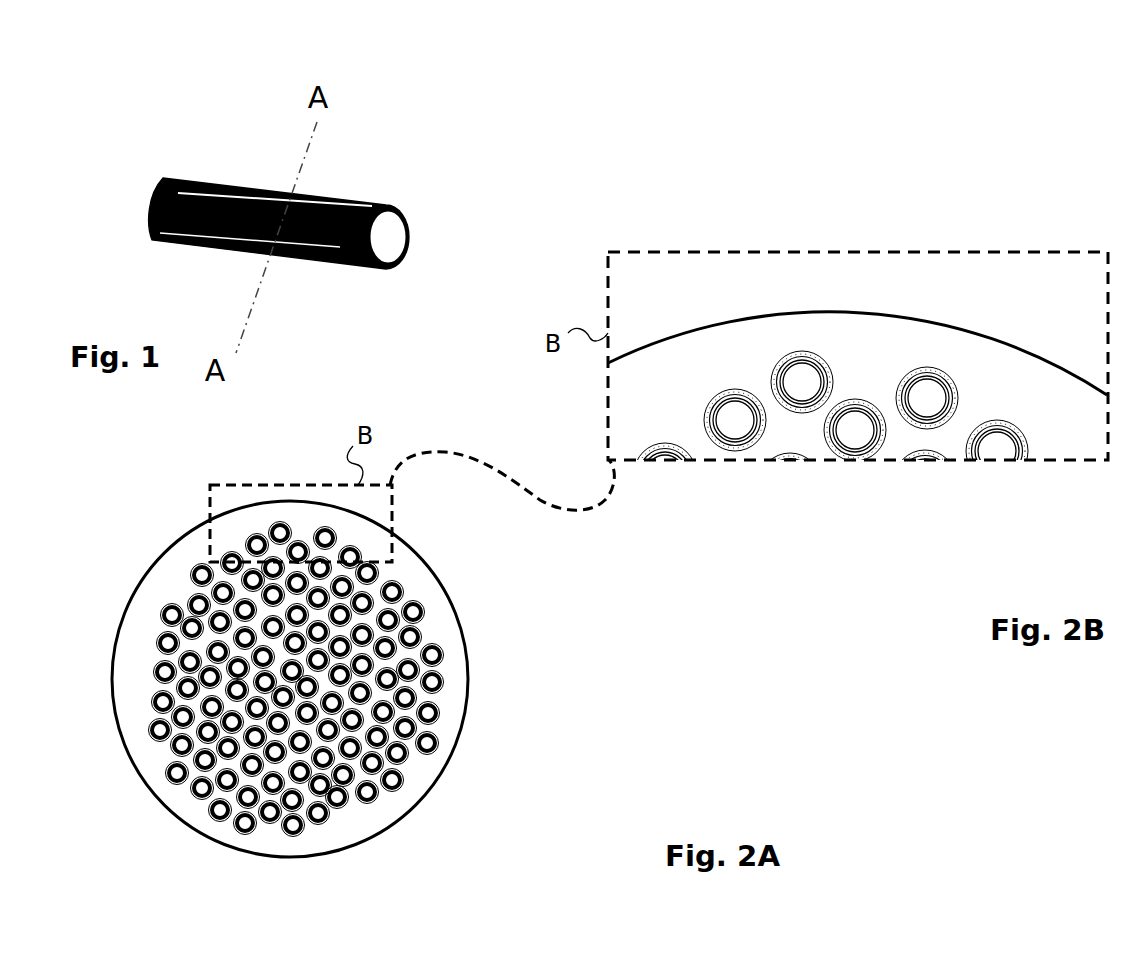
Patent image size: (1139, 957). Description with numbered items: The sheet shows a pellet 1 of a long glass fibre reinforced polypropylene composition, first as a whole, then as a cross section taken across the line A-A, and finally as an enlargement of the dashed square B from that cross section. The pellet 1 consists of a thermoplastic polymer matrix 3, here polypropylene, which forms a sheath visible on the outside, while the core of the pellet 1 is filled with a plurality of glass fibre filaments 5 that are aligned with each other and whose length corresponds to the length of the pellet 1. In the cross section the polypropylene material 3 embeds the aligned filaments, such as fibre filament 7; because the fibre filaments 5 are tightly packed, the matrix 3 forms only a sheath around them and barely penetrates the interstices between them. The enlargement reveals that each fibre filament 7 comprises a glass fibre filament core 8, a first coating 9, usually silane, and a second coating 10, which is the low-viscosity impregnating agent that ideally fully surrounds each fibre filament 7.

In FIG. 1, the pellet 1 is at (320, 197).
In FIG. 2A, the pellet 1 is at (338, 679).
In FIG. 1, the thermoplastic polymer matrix 3 is at (368, 193).
In FIG. 2A, the thermoplastic polymer matrix 3 is at (440, 633).
In FIG. 2B, the thermoplastic polymer matrix 3 is at (728, 350).
In FIG. 1, the glass fibre filaments 5 is at (396, 237).
In FIG. 2A, the fibre filament 7 is at (427, 758).
In FIG. 2B, the fibre filament 7 is at (980, 370).
In FIG. 2B, the glass fibre filament core 8 is at (921, 400).
In FIG. 2B, the first coating 9 is at (935, 380).
In FIG. 2B, the second coating 10 is at (917, 377).